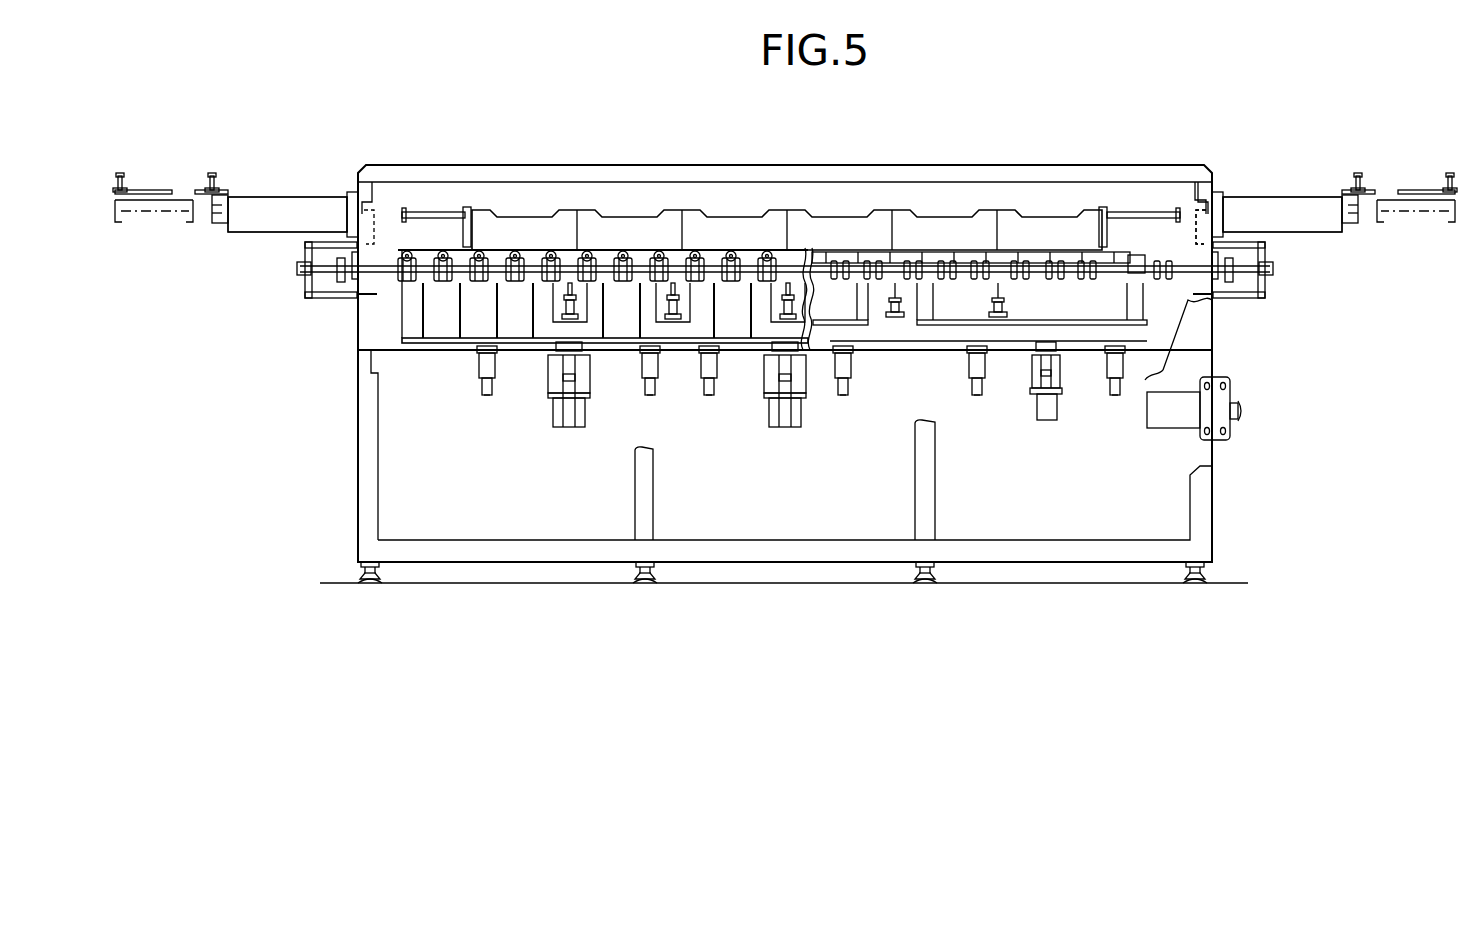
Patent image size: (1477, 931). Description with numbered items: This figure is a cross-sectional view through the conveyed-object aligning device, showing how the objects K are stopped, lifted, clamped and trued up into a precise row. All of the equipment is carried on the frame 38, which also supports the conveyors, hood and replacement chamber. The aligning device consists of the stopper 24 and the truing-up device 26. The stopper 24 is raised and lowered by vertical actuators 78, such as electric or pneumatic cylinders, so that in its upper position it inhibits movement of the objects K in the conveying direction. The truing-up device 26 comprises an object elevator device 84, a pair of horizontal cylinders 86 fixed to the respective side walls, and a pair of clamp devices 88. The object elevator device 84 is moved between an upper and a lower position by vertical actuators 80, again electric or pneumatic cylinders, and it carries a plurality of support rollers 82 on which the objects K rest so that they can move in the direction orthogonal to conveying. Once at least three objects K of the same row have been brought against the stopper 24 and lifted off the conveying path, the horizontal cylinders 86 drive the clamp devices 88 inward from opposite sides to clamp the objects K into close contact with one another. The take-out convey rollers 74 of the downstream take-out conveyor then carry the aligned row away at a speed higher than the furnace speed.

The truing-up device 26 is at (278, 170).
The horizontal cylinder 86 is at (263, 226).
The clamp device 88 is at (392, 240).
The support roller 82 is at (404, 250).
The object K is at (731, 230).
The stopper 24 is at (1128, 262).
The take-out convey roller 74 is at (416, 292).
The object elevator device 84 is at (416, 335).
The frame 38 is at (374, 463).
The vertical actuator 80 is at (573, 427).
The vertical actuator 78 is at (1048, 420).